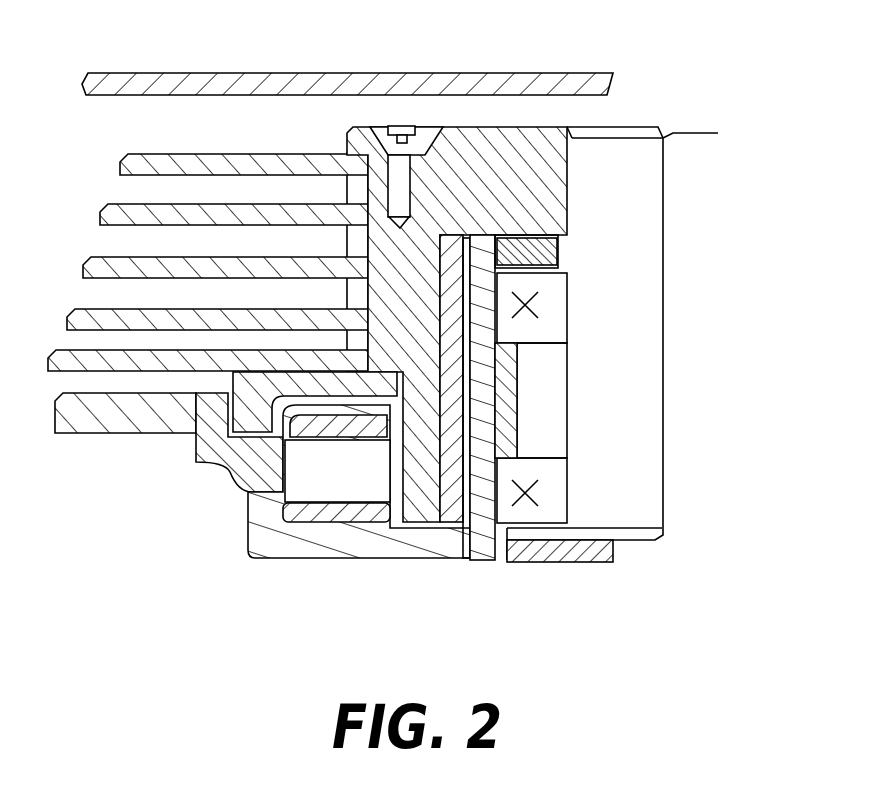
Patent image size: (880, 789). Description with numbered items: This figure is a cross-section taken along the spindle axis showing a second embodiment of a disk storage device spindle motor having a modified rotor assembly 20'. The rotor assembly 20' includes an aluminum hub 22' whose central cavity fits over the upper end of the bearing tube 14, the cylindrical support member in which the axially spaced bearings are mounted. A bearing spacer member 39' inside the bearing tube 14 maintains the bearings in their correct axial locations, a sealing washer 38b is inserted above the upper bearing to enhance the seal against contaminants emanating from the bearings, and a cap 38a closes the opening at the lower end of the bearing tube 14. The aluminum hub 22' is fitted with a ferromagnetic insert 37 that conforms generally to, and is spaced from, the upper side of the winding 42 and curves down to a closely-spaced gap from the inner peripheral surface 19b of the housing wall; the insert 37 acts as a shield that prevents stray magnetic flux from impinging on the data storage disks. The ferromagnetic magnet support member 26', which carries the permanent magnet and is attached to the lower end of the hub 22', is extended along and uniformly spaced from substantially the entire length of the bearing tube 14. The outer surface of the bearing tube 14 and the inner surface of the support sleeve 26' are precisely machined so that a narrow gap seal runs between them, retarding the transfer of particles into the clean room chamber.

The rotor assembly 20' is at (208, 265).
The aluminum hub 22' is at (457, 269).
The ferromagnetic insert 37 is at (200, 442).
The inner peripheral surface 19b is at (260, 445).
The winding 42 is at (250, 530).
The ferromagnetic magnet support member 26' is at (475, 447).
The bearing tube 14 is at (483, 478).
The sealing washer 38b is at (553, 255).
The bearing spacer member 39' is at (621, 400).
The cap 38a is at (573, 563).